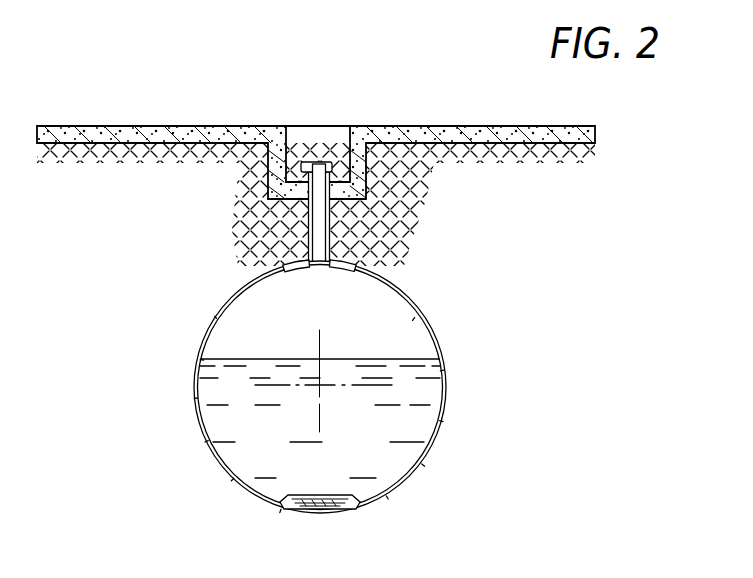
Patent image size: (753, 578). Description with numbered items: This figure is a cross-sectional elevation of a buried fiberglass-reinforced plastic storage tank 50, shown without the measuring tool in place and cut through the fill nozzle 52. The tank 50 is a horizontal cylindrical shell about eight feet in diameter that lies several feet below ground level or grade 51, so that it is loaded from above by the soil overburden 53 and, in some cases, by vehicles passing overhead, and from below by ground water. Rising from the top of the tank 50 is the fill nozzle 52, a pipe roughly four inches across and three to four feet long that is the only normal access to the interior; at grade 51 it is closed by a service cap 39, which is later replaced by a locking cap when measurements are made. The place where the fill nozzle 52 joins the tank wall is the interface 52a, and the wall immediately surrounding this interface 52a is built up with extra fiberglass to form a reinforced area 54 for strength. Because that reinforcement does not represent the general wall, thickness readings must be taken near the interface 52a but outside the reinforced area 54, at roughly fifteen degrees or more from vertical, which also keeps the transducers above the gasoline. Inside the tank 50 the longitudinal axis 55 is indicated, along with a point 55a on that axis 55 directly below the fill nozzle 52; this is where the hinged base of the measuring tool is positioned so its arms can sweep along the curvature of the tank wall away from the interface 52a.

The service cap 39 is at (319, 161).
The tank 50 is at (432, 327).
The ground level or grade 51 is at (130, 133).
The fill nozzle 52 is at (342, 228).
The fill nozzle interface 52a is at (312, 277).
The soil overburden 53 is at (198, 215).
The reinforced area 54 is at (350, 270).
The longitudinal axis 55 is at (322, 388).
The point on longitudinal axis 55a is at (322, 387).